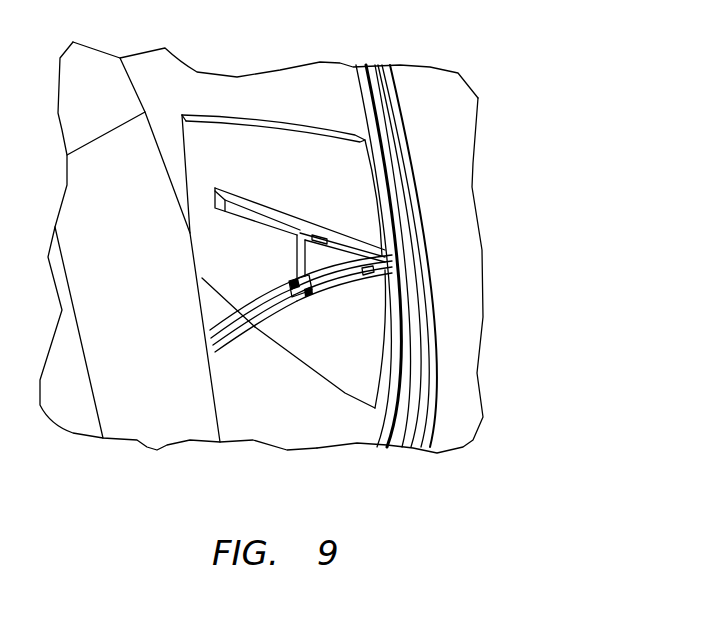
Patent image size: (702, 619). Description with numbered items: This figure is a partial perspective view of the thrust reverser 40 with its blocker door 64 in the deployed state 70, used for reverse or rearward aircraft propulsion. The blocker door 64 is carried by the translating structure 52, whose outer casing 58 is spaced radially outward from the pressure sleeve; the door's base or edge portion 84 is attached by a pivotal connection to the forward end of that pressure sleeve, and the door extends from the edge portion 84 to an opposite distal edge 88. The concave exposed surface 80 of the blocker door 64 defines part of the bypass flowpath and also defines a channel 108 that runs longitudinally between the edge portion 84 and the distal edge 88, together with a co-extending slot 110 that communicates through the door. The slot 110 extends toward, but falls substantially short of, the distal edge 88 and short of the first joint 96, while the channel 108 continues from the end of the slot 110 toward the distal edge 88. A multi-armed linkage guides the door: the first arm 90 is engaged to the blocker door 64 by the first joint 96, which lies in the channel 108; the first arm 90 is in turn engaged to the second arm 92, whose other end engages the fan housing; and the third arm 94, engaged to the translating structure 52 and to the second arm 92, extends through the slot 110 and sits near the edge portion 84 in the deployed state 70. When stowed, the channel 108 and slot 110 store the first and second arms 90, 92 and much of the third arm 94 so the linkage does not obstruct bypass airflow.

The thrust reverser 40 is at (519, 80).
The translating structure 52 is at (455, 432).
The outer casing 58 is at (162, 422).
The blocker door 64 is at (291, 371).
The deployed state 70 is at (343, 401).
The exposed surface 80 is at (255, 152).
The edge portion 84 is at (388, 303).
The distal edge 88 is at (180, 132).
The first arm 90 is at (297, 263).
The second arm 92 is at (248, 333).
The third arm 94 is at (343, 292).
The first joint 96 is at (297, 234).
The channel 108 is at (257, 222).
The slot 110 is at (328, 242).